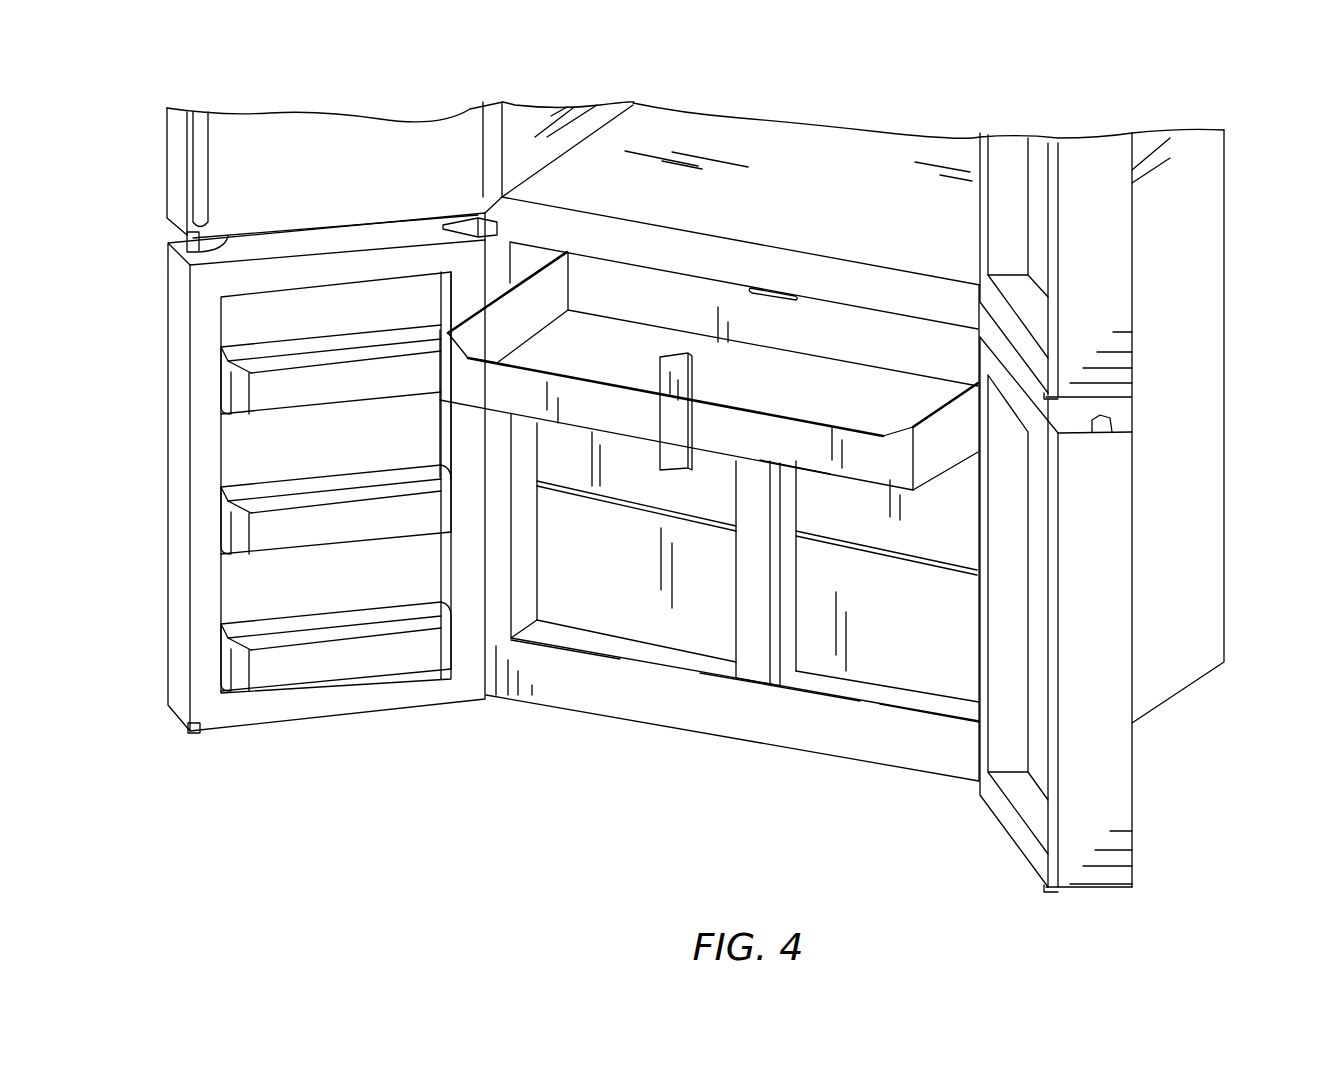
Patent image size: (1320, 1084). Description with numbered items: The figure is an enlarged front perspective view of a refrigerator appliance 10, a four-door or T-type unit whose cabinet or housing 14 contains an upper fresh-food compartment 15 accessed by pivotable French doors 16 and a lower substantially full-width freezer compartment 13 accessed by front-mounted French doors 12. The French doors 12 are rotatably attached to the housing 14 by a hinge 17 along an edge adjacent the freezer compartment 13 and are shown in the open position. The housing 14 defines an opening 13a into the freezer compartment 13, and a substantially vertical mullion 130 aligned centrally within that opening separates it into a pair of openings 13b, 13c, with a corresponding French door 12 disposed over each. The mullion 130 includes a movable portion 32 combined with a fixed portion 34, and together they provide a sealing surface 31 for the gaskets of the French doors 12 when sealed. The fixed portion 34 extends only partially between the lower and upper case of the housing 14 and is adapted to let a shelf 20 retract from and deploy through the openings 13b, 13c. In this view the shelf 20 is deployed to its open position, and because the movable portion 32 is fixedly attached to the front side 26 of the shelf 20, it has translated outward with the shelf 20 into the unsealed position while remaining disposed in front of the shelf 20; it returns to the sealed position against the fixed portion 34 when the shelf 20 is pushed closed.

The refrigerator appliance 10 is at (222, 84).
The French doors 12 is at (200, 680).
The freezer compartment 13 is at (656, 722).
The opening 13a is at (789, 725).
The opening 13b is at (584, 665).
The opening 13c is at (908, 722).
The cabinet or housing 14 is at (1185, 560).
The fresh-food compartment 15 is at (742, 132).
The French doors 16 is at (180, 174).
The hinge 17 is at (497, 226).
The shelf 20 is at (877, 470).
The front side 26 is at (825, 462).
The sealing surface 31 is at (685, 433).
The movable portion 32 is at (655, 423).
The fixed portion 34 is at (759, 639).
The mullion 130 is at (698, 548).